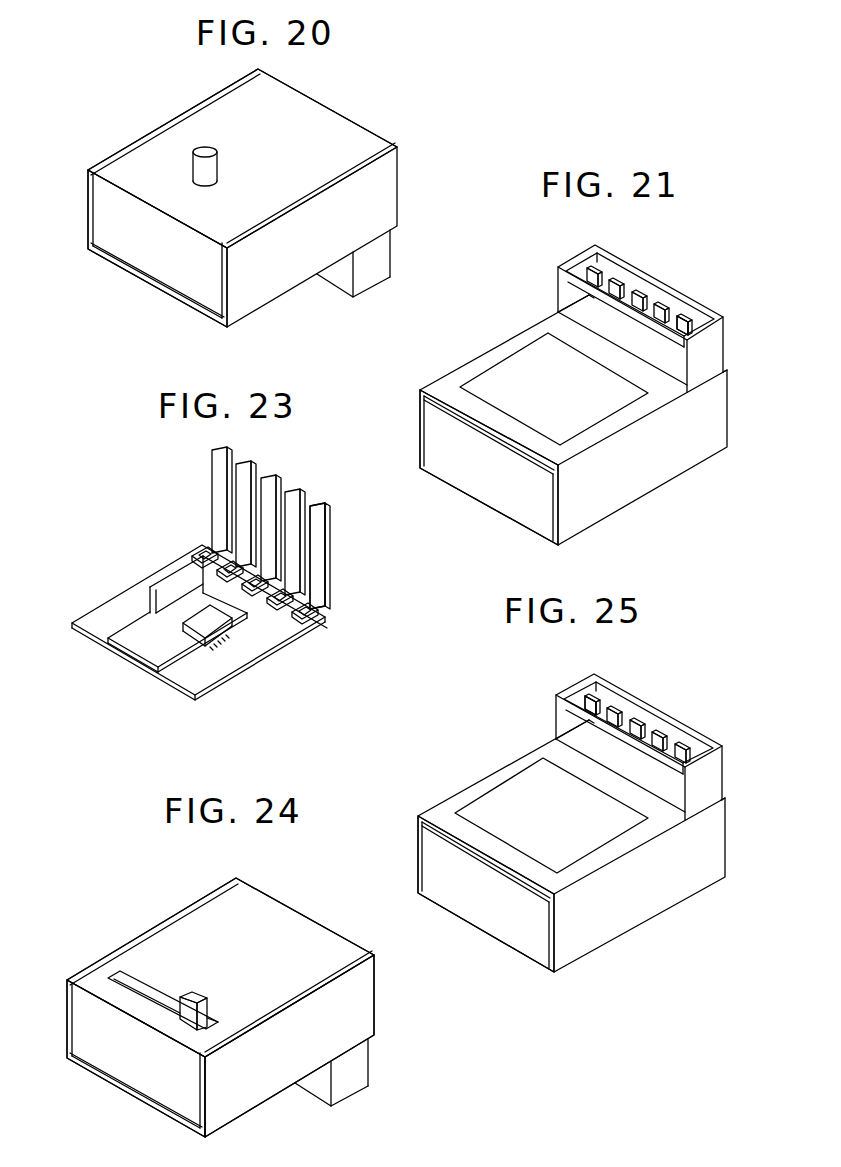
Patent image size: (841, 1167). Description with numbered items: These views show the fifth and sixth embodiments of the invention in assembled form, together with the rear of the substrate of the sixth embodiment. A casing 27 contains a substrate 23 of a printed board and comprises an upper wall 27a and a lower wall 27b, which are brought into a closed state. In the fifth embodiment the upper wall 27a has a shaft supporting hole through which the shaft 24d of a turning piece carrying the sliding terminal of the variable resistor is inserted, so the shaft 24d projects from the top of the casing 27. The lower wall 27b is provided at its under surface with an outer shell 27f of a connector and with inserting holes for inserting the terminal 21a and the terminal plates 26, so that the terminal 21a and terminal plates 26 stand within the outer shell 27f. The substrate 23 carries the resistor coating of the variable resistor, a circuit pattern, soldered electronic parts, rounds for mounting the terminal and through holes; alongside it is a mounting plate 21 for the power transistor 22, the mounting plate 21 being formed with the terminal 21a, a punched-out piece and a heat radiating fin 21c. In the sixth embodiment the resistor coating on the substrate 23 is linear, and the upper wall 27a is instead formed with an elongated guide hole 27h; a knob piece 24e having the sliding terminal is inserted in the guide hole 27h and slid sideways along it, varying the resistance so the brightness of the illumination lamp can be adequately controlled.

In FIG. 23, the mounting plate 21 is at (152, 643).
In FIG. 21, the terminal 21a is at (645, 293).
In FIG. 23, the terminal 21a is at (265, 492).
In FIG. 25, the terminal 21a is at (638, 727).
In FIG. 23, the heat radiating fin 21c is at (168, 592).
In FIG. 23, the power transistor 22 is at (203, 610).
In FIG. 23, the substrate 23 is at (242, 648).
In FIG. 20, the shaft 24d is at (200, 153).
In FIG. 24, the knob piece 24e is at (208, 1023).
In FIG. 21, the terminal plates 26 is at (682, 320).
In FIG. 23, the terminal plates 26 is at (317, 550).
In FIG. 25, the terminal plates 26 is at (587, 690).
In FIG. 20, the casing 27 is at (397, 192).
In FIG. 21, the casing 27 is at (645, 497).
In FIG. 25, the casing 27 is at (642, 925).
In FIG. 24, the casing 27 is at (307, 917).
In FIG. 20, the upper wall 27a is at (293, 128).
In FIG. 21, the upper wall 27a is at (505, 482).
In FIG. 25, the upper wall 27a is at (448, 872).
In FIG. 24, the upper wall 27a is at (205, 925).
In FIG. 20, the lower wall 27b is at (257, 277).
In FIG. 21, the lower wall 27b is at (517, 343).
In FIG. 25, the lower wall 27b is at (518, 765).
In FIG. 24, the lower wall 27b is at (328, 1012).
In FIG. 20, the outer shell 27f is at (373, 265).
In FIG. 21, the outer shell 27f is at (578, 297).
In FIG. 25, the outer shell 27f is at (702, 773).
In FIG. 24, the outer shell 27f is at (360, 1063).
In FIG. 24, the guide hole 27h is at (120, 982).